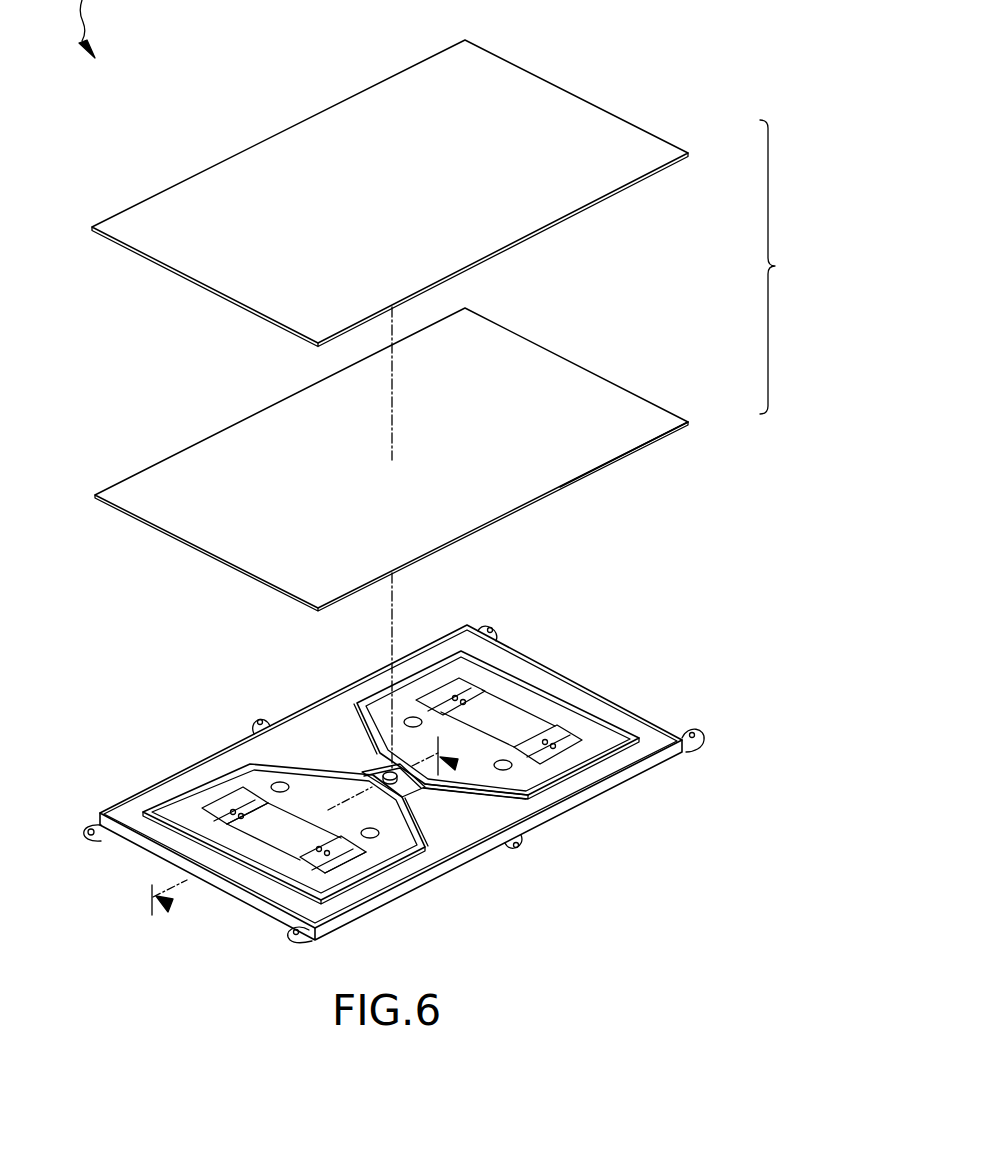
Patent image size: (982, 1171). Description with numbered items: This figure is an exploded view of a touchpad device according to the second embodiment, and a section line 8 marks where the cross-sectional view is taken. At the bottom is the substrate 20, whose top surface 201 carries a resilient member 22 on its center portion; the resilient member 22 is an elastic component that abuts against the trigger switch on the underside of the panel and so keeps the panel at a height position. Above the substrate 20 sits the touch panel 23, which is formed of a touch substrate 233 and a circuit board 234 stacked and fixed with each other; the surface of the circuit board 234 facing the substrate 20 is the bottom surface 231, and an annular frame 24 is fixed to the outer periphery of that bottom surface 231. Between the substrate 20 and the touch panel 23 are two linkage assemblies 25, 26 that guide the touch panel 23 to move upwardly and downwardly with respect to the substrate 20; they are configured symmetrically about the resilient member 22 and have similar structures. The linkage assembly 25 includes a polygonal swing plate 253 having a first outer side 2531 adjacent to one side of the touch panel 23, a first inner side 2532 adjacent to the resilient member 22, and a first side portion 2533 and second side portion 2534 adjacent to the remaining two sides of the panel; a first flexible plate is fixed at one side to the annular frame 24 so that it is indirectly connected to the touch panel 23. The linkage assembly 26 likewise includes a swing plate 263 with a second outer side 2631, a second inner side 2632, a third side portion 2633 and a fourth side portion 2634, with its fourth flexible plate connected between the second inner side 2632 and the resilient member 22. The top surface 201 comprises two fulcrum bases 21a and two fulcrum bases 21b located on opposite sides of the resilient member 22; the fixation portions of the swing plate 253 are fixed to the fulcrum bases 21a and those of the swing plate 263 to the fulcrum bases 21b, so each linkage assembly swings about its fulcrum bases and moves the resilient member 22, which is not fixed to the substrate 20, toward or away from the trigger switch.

The substrate 20 is at (112, 838).
The top surface 201 is at (93, 820).
The fulcrum base 21a is at (280, 782).
The fulcrum base 21b is at (508, 766).
The resilient member 22 is at (384, 770).
The touch panel 23 is at (784, 267).
The bottom surface 231 is at (626, 452).
The touch substrate 233 is at (668, 152).
The circuit board 234 is at (668, 421).
The annular frame 24 is at (134, 818).
The linkage assembly 25 is at (178, 805).
The swing plate 253 is at (347, 877).
The first outer side 2531 is at (258, 858).
The first inner side 2532 is at (348, 770).
The first side portion 2533 is at (383, 860).
The second side portion 2534 is at (213, 786).
The linkage assembly 26 is at (420, 676).
The swing plate 263 is at (594, 713).
The second outer side 2631 is at (538, 694).
The second inner side 2632 is at (432, 773).
The third side portion 2633 is at (578, 760).
The fourth side portion 2634 is at (441, 676).
The section line 8- 8 is at (578, 826).